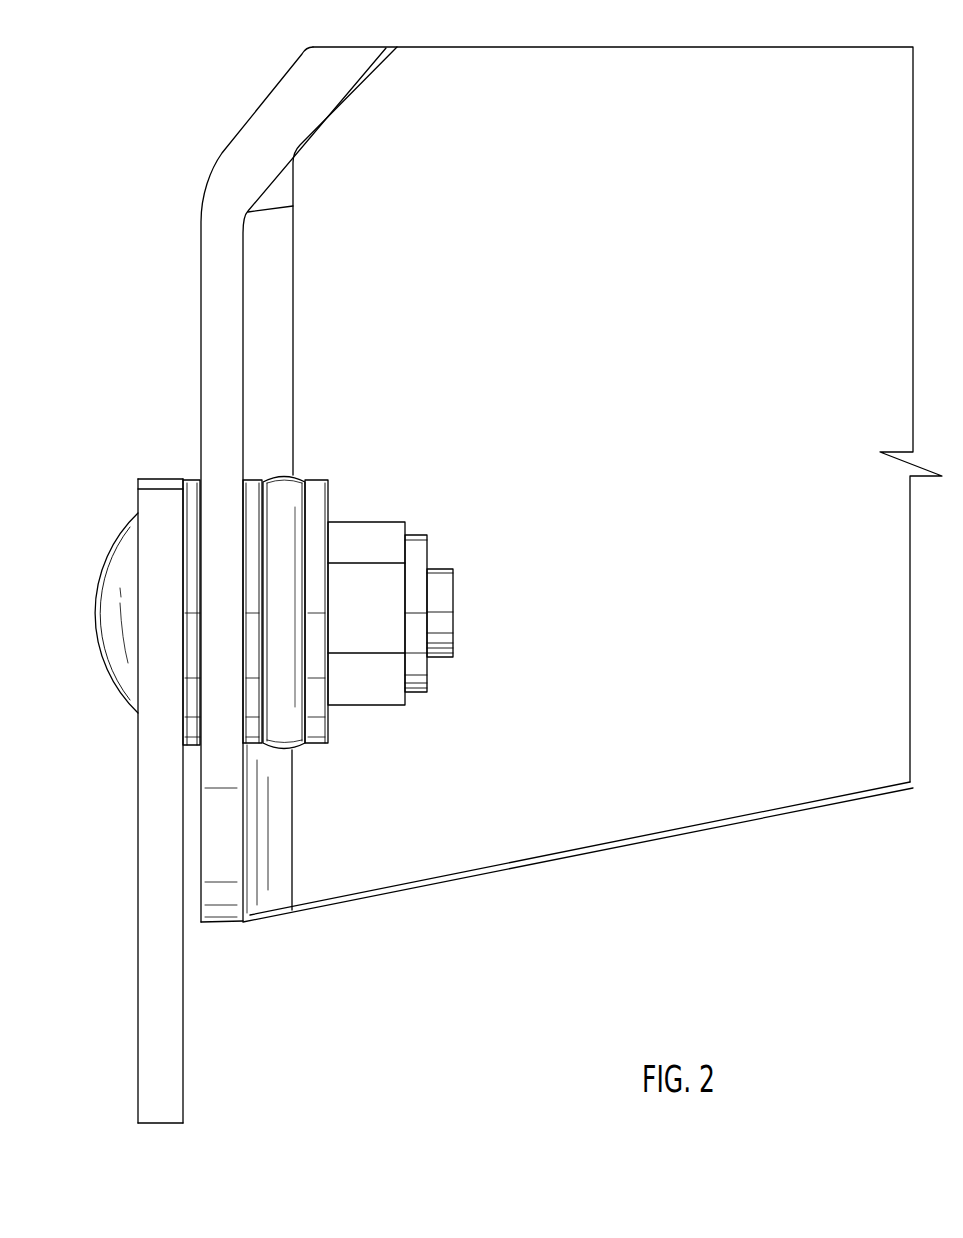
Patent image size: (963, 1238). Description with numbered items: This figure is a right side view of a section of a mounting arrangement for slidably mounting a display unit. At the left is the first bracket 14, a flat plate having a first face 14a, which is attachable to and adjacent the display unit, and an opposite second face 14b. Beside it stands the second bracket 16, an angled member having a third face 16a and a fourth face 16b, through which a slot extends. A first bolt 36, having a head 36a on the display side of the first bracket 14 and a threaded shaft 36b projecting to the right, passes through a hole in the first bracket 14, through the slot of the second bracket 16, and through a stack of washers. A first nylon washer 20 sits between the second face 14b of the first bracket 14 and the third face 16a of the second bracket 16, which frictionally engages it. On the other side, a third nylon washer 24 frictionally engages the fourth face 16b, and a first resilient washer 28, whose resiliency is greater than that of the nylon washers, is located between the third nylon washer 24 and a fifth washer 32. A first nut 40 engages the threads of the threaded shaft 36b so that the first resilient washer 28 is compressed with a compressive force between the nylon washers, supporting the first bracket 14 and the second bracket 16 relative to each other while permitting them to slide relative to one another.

The first bracket 14 is at (185, 839).
The first face 14a is at (138, 1025).
The second face 14b is at (185, 1049).
The second bracket 16 is at (244, 484).
The third face 16a is at (200, 222).
The fourth face 16b is at (242, 233).
The first nylon washer 20 is at (190, 517).
The third nylon washer 24 is at (250, 705).
The first resilient washer 28 is at (275, 700).
The fifth washer 32 is at (315, 698).
The first bolt 36 is at (313, 613).
The head 36a is at (113, 622).
The threaded shaft 36b is at (445, 622).
The first nut 40 is at (363, 670).